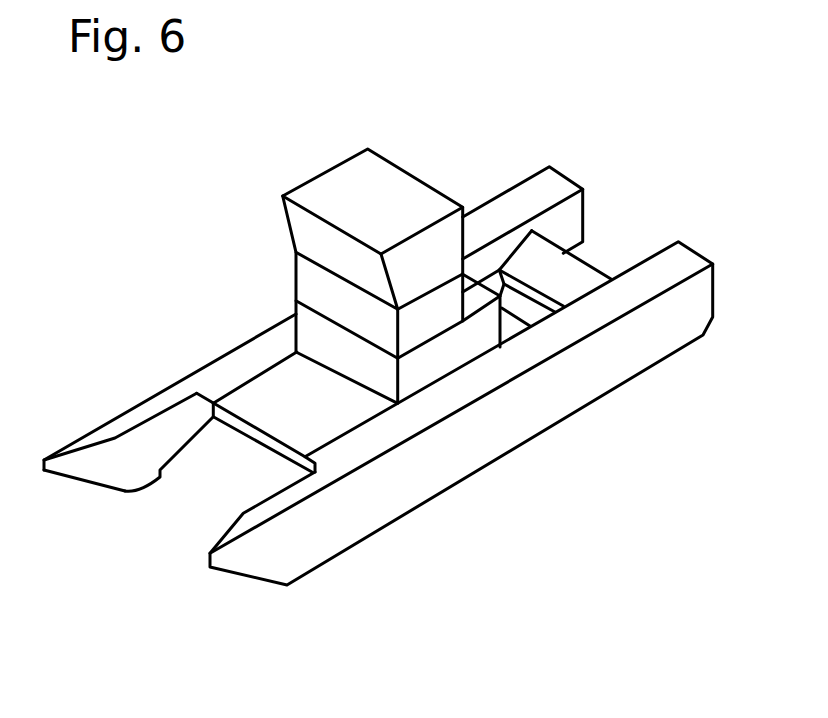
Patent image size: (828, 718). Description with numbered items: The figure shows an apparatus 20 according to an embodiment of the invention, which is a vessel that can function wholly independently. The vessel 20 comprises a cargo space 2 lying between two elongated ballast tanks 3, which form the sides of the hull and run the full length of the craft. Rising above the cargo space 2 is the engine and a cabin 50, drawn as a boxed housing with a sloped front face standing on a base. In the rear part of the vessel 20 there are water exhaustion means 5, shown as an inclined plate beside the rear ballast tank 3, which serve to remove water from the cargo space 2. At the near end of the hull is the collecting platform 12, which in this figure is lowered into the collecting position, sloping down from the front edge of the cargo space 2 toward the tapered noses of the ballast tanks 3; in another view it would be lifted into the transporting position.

The apparatus 20 is at (176, 291).
The cargo space 2 is at (333, 408).
The ballast tanks 3 is at (503, 215).
The water exhaustion means 5 is at (528, 308).
The collecting platform 12 is at (212, 473).
The engine and a cabin 50 is at (313, 230).